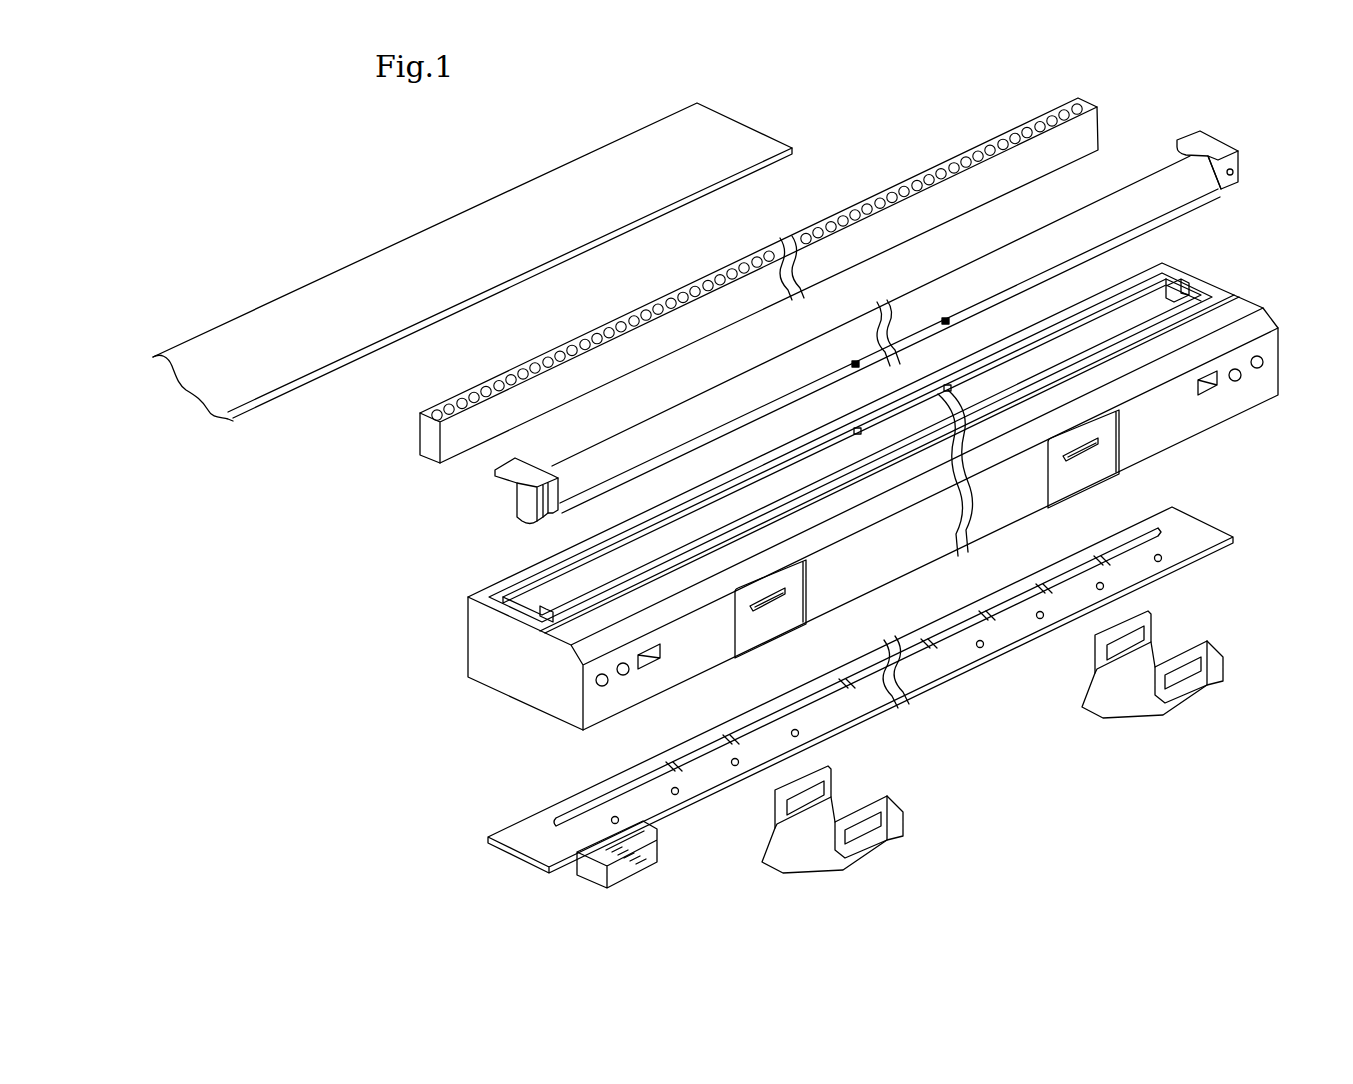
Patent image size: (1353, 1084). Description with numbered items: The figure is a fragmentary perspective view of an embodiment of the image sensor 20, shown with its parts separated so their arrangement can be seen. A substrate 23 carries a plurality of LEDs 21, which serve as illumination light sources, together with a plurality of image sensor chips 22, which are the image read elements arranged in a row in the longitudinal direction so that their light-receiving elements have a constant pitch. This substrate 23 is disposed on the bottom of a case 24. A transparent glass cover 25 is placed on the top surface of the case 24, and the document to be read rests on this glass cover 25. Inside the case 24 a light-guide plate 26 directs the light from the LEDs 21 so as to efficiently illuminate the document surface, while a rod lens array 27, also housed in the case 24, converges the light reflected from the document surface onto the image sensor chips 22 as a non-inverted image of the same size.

The image sensor 20 is at (881, 142).
The LED 21 is at (1163, 561).
The image sensor chip 22 is at (1126, 552).
The substrate 23 is at (876, 698).
The case 24 is at (504, 562).
The transparent glass cover 25 is at (528, 198).
The light-guide plate 26 is at (1020, 255).
The rod lens array 27 is at (721, 262).